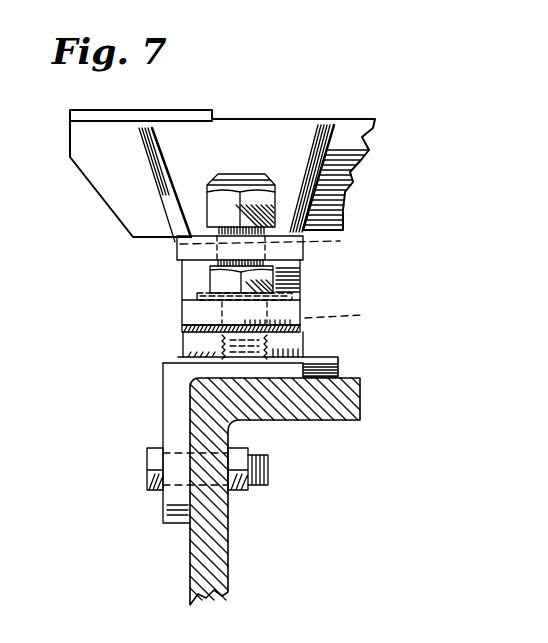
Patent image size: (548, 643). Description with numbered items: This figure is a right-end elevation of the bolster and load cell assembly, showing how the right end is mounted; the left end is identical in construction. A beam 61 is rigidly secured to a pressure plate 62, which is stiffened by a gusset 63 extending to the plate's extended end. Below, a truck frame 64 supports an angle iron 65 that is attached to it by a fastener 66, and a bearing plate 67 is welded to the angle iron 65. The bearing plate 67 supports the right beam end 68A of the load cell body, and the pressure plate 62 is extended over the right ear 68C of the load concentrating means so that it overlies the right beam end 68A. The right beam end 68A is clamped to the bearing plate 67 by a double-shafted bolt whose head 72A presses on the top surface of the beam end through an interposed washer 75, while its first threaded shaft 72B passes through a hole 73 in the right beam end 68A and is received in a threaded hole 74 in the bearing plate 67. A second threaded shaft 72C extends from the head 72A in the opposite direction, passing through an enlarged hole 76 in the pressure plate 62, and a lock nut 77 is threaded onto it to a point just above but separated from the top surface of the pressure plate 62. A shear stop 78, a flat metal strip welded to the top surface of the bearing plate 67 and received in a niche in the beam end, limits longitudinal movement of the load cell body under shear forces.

The beam 61 is at (358, 148).
The pressure plate 62 is at (306, 256).
The gusset 63 is at (166, 176).
The truck frame 64 is at (348, 400).
The angle iron 65 is at (175, 383).
The fastener 66 is at (158, 492).
The bearing plate 67 is at (305, 346).
The right beam end 68A is at (298, 304).
The right ear 68C is at (213, 274).
The head 72A is at (210, 296).
The first threaded shaft 72B is at (352, 314).
The second threaded shaft 72C is at (340, 241).
The hole 73 is at (222, 311).
The threaded hole 74 is at (222, 340).
The washer 75 is at (182, 300).
The enlarged hole 76 is at (178, 246).
The lock nut 77 is at (273, 183).
The shear stop 78 is at (303, 326).